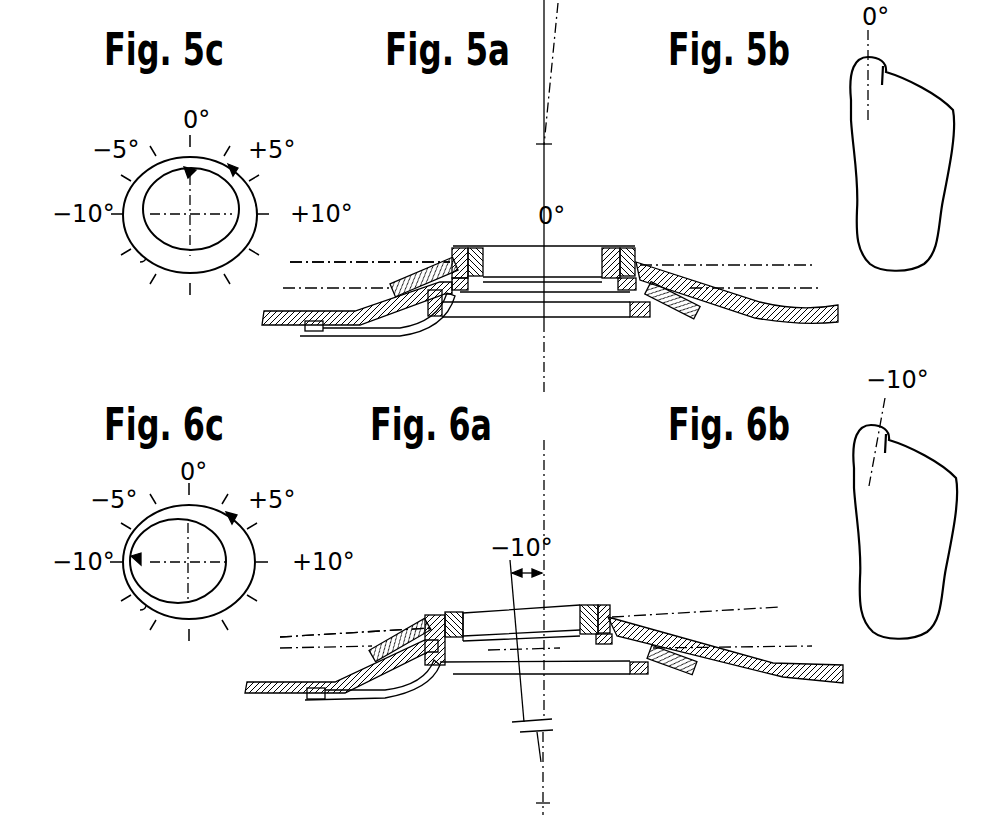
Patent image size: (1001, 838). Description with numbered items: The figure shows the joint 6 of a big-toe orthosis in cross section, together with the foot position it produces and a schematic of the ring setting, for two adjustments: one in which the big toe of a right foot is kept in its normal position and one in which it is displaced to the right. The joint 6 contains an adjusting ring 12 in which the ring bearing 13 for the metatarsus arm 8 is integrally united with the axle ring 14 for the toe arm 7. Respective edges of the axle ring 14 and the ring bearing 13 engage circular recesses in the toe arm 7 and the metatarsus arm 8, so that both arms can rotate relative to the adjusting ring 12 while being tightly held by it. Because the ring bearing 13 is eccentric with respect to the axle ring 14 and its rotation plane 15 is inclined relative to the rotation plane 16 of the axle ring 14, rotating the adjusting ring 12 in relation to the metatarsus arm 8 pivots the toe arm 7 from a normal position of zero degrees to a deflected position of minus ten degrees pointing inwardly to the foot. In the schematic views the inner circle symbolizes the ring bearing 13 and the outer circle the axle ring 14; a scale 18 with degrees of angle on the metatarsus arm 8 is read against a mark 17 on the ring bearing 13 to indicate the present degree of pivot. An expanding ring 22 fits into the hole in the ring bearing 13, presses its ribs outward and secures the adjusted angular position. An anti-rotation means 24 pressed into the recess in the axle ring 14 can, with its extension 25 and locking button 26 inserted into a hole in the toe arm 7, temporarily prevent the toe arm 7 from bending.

In FIG. 5A, the joint 6 is at (528, 320).
In FIG. 6A, the joint 6 is at (480, 682).
In FIG. 5A, the toe arm 7 is at (272, 328).
In FIG. 6A, the toe arm 7 is at (286, 694).
In FIG. 5A, the metatarsus arm 8 is at (749, 322).
In FIG. 6A, the metatarsus arm 8 is at (776, 680).
In FIG. 5C, the adjusting ring 12 is at (233, 170).
In FIG. 5A, the adjusting ring 12 is at (462, 312).
In FIG. 6C, the adjusting ring 12 is at (232, 518).
In FIG. 6A, the adjusting ring 12 is at (606, 646).
In FIG. 5C, the ring bearing 13 is at (150, 190).
In FIG. 5A, the ring bearing 13 is at (622, 250).
In FIG. 6C, the ring bearing 13 is at (175, 522).
In FIG. 6A, the ring bearing 13 is at (437, 613).
In FIG. 5C, the axle ring 14 is at (140, 263).
In FIG. 5A, the axle ring 14 is at (662, 310).
In FIG. 6C, the axle ring 14 is at (140, 612).
In FIG. 6A, the axle ring 14 is at (658, 676).
In FIG. 5A, the rotation plane of the ring bearing 15 is at (397, 262).
In FIG. 6A, the rotation plane of the ring bearing 15 is at (345, 630).
In FIG. 5A, the rotation plane of the axle ring 16 is at (340, 288).
In FIG. 6A, the rotation plane of the axle ring 16 is at (301, 648).
In FIG. 5C, the mark 17 is at (188, 170).
In FIG. 6C, the mark 17 is at (136, 558).
In FIG. 5C, the scale 18 is at (137, 268).
In FIG. 6C, the scale 18 is at (136, 608).
In FIG. 5A, the expanding ring 22 is at (484, 247).
In FIG. 6A, the expanding ring 22 is at (590, 604).
In FIG. 5A, the anti-rotation means 24 is at (634, 318).
In FIG. 6A, the anti-rotation means 24 is at (640, 676).
In FIG. 5A, the extension 25 is at (378, 338).
In FIG. 6A, the extension 25 is at (378, 702).
In FIG. 5A, the locking button 26 is at (310, 332).
In FIG. 6A, the locking button 26 is at (320, 702).